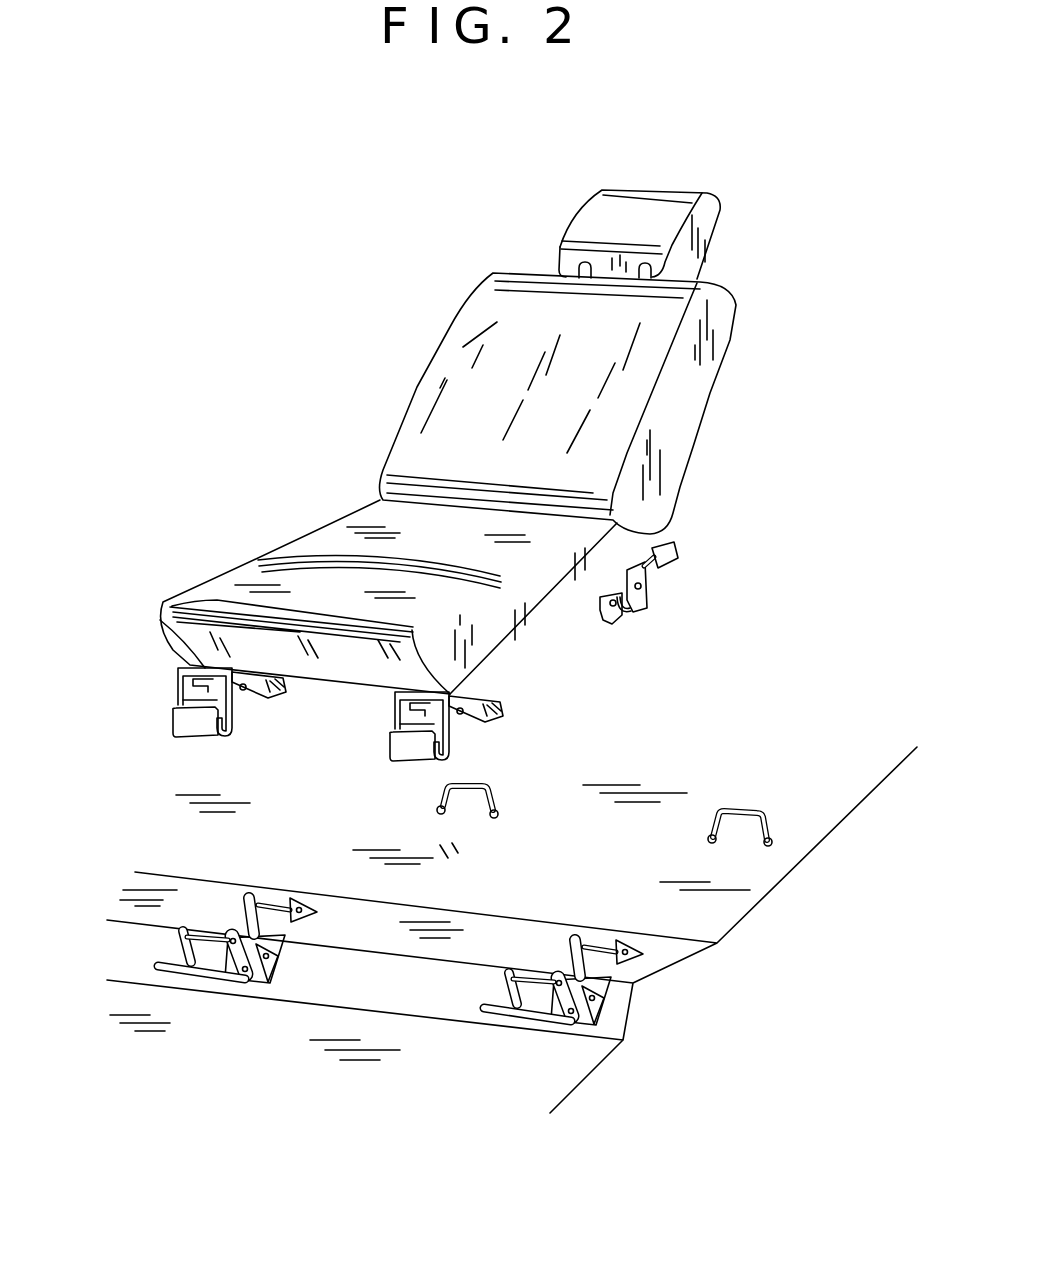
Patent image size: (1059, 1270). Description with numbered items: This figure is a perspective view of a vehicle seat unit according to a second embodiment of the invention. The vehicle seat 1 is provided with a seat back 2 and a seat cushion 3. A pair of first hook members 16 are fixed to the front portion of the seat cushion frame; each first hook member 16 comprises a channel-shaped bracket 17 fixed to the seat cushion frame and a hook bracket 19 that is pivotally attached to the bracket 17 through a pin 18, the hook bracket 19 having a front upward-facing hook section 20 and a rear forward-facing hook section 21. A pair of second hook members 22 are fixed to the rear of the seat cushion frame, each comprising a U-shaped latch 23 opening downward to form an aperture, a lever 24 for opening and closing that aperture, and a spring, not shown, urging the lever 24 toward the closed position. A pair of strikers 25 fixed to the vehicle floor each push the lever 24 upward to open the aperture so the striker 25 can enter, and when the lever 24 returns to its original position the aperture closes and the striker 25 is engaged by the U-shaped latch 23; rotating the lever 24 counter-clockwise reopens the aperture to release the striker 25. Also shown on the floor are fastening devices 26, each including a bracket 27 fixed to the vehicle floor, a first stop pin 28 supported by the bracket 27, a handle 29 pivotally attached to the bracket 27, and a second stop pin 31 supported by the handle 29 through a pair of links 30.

The vehicle seat 1 is at (448, 442).
The seat back 2 is at (477, 363).
The seat cushion 3 is at (313, 543).
The first hook member 16 is at (351, 707).
The channel-shaped bracket 17 is at (190, 687).
The pin 18 is at (212, 675).
The hook bracket 19 is at (205, 704).
The front upward-facing hook section 20 is at (193, 723).
The rear forward-facing hook section 21 is at (287, 697).
The second hook member 22 is at (689, 618).
The U-shaped latch 23 is at (603, 625).
The lever 24 is at (680, 556).
The striker 25 is at (467, 797).
The fastening device 26 is at (414, 958).
The bracket 27 is at (284, 934).
The first stop pin 28 is at (273, 908).
The handle 29 is at (183, 975).
The link 30 is at (180, 947).
The second stop pin 31 is at (207, 937).